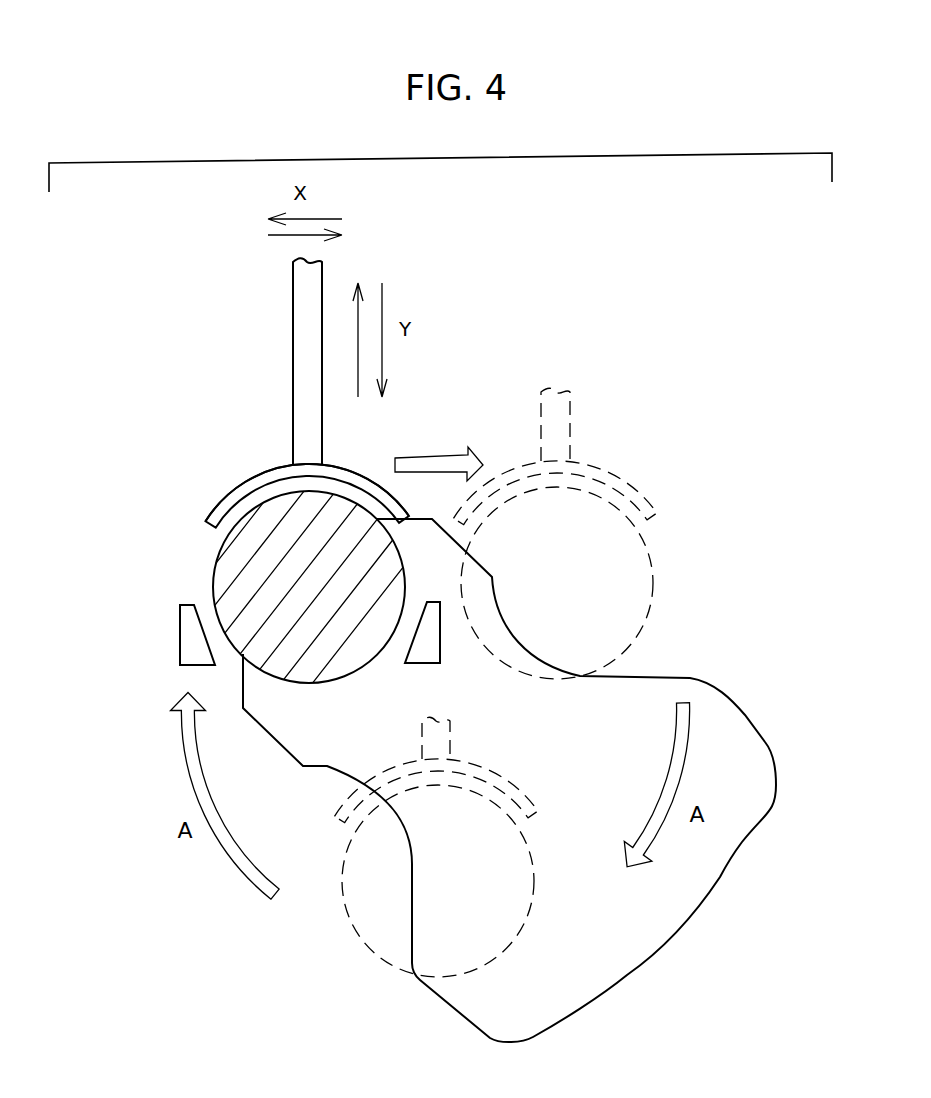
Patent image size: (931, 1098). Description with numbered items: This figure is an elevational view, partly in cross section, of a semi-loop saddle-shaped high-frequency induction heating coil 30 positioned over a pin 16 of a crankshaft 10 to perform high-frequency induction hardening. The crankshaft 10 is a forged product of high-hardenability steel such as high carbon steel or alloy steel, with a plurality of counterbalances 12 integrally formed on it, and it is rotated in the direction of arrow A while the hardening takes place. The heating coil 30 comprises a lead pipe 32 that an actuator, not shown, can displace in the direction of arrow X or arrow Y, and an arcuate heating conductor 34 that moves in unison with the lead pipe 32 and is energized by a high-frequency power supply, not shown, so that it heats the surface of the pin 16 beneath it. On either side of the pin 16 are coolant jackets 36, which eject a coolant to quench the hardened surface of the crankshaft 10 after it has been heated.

The crankshaft 10 is at (763, 702).
The counterbalance 12 is at (637, 913).
The pin 16 is at (245, 568).
The high-frequency induction heating coil 30 is at (272, 446).
The lead pipe 32 is at (305, 340).
The arcuate heating conductor 34 is at (353, 467).
The coolant jacket 36 is at (197, 645).